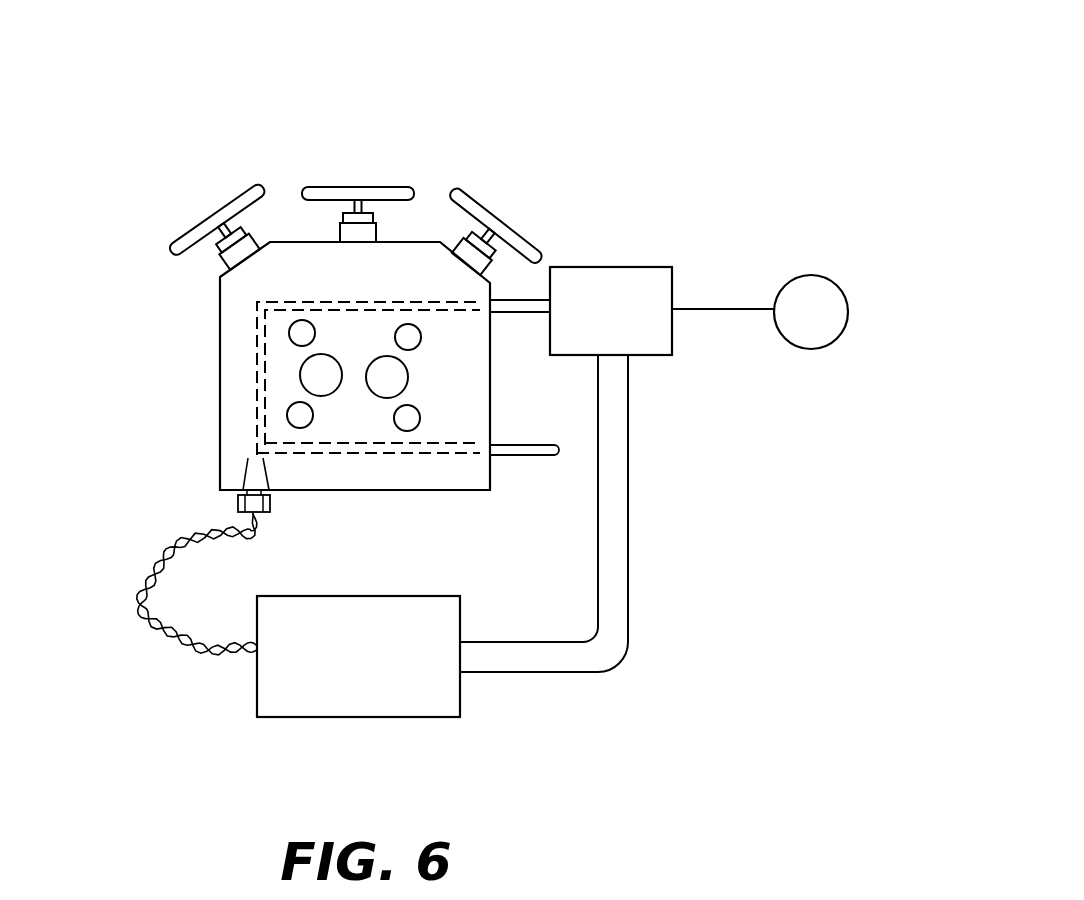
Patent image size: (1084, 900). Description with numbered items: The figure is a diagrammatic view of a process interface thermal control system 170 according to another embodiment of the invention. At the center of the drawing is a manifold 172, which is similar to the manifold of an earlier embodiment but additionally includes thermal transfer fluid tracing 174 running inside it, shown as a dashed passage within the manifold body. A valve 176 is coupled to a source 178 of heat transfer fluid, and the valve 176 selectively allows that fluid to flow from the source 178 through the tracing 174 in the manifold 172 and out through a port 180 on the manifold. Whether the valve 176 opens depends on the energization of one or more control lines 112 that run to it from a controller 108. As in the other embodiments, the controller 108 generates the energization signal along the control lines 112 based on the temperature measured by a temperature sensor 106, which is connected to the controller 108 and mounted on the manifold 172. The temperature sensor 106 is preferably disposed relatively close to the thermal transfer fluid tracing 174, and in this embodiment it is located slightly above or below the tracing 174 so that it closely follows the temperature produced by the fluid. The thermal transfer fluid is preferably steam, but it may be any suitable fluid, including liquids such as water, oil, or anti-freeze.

The process interface thermal control system 170 is at (610, 117).
The manifold 172 is at (220, 385).
The thermal transfer fluid tracing 174 is at (383, 300).
The valve 176 is at (612, 267).
The source of heat transfer fluid 178 is at (760, 312).
The port 180 is at (492, 457).
The temperature sensor 106 is at (240, 507).
The controller 108 is at (338, 685).
The control lines 112 is at (570, 645).